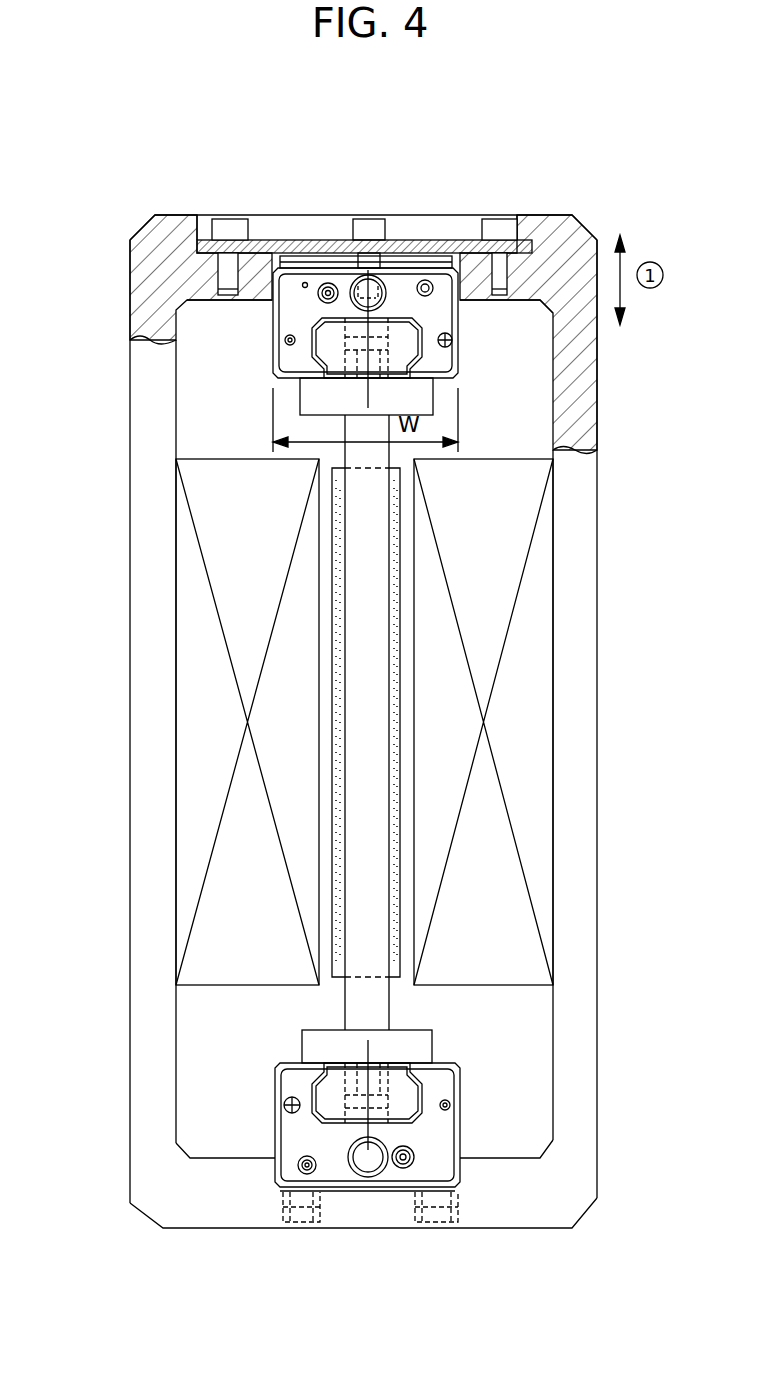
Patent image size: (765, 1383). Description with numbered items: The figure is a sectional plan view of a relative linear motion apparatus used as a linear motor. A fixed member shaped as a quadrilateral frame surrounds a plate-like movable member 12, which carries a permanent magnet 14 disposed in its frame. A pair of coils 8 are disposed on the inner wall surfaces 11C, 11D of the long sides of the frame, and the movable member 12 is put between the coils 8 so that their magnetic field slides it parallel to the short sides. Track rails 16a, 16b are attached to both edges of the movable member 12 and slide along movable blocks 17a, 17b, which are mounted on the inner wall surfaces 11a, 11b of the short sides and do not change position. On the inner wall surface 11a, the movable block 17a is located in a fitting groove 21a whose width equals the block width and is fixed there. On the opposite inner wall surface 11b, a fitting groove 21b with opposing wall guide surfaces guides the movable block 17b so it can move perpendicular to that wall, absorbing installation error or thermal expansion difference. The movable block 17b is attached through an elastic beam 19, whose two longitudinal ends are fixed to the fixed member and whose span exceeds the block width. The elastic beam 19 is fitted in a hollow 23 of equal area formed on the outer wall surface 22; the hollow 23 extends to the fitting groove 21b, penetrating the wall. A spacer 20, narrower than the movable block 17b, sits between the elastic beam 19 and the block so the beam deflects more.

The coil 8 is at (188, 583).
The inner wall surface 11a is at (490, 1207).
The inner wall surface 11b is at (478, 313).
The inner wall surface 11C is at (185, 725).
The inner wall surface 11D is at (545, 732).
The movable member 12 is at (377, 1017).
The permanent magnet 14 is at (398, 950).
The track rail 16a is at (405, 1167).
The track rail 16b is at (327, 288).
The movable block 17a is at (338, 1163).
The movable block 17b is at (402, 284).
The elastic beam 19 is at (291, 246).
The spacer 20 is at (370, 290).
The fitting groove 21a is at (282, 1187).
The fitting groove 21b is at (449, 290).
The outer wall surface 22 is at (550, 217).
The hollow 23 is at (262, 250).